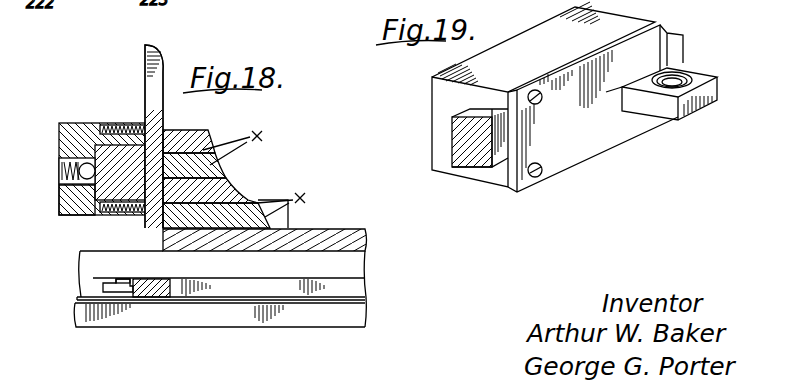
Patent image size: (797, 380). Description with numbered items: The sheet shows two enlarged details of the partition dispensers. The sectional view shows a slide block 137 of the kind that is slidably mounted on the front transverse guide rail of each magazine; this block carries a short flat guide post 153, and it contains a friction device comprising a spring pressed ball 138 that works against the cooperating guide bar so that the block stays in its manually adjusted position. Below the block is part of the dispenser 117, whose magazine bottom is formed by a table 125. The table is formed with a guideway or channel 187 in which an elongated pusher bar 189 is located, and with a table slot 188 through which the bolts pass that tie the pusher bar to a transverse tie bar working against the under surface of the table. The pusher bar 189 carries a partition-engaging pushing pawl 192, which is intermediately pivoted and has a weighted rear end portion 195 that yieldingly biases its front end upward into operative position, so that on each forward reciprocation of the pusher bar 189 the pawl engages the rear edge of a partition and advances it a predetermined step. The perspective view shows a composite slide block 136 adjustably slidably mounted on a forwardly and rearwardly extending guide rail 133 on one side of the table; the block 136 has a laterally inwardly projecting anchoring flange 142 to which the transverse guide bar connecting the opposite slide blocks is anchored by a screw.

In FIG. 18, the slide block 137 is at (72, 124).
In FIG. 18, the short flat guide post 153 is at (157, 98).
In FIG. 18, the spring pressed ball 138 is at (72, 184).
In FIG. 18, the cell case partition dispenser 117 is at (60, 201).
In FIG. 18, the pusher bar 189 is at (345, 290).
In FIG. 18, the pushing pawl 192 is at (101, 285).
In FIG. 18, the weighted rear end portion 195 is at (116, 279).
In FIG. 18, the table guideway 187 is at (75, 296).
In FIG. 18, the table 125 is at (205, 312).
In FIG. 18, the table slot 188 is at (322, 313).
In FIG. 19, the composite slide block 136 is at (440, 100).
In FIG. 19, the guide rail 133 is at (457, 137).
In FIG. 19, the anchoring flange 142 is at (703, 97).